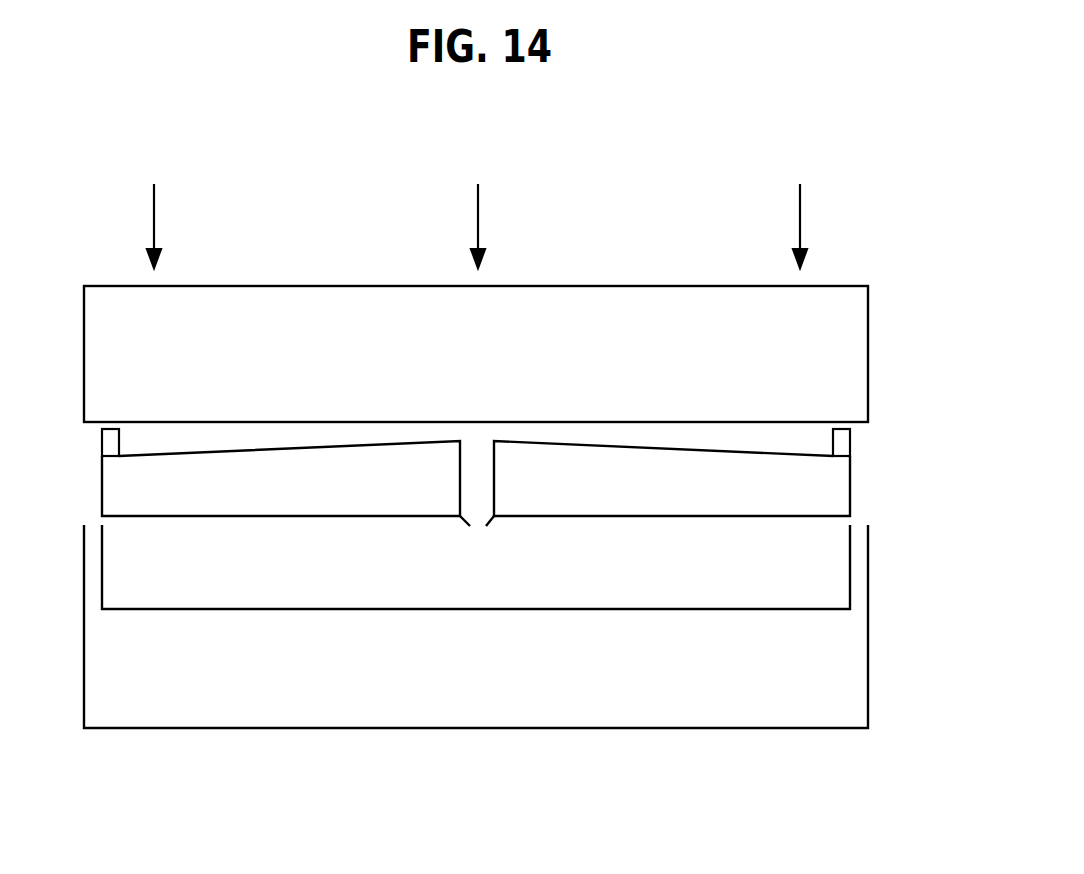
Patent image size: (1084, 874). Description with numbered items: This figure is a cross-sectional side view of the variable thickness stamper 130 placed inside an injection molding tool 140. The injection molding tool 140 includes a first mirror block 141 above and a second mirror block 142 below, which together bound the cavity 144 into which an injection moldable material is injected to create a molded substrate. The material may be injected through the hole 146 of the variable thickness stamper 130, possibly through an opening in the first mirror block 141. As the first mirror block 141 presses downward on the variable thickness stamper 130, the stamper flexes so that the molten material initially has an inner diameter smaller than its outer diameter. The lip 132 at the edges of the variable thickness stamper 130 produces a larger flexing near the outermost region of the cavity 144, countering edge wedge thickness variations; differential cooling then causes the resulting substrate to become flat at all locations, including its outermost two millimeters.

The injection molding tool 140 is at (605, 189).
The first mirror block 141 is at (868, 358).
The lip 132 is at (102, 443).
The variable thickness stamper 130 is at (850, 508).
The second mirror block 142 is at (868, 702).
The cavity 144 is at (612, 557).
The hole 146 is at (477, 463).